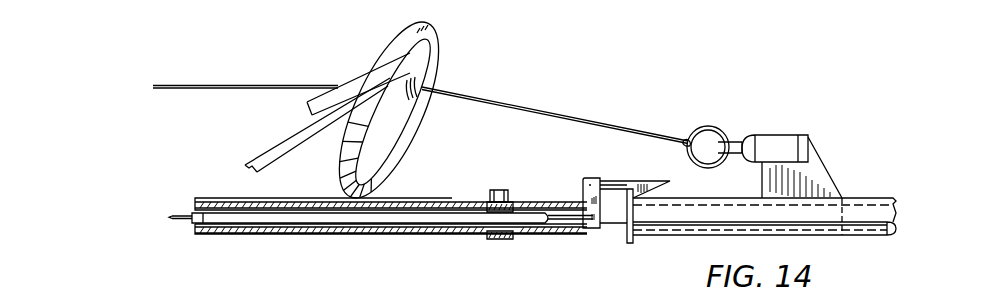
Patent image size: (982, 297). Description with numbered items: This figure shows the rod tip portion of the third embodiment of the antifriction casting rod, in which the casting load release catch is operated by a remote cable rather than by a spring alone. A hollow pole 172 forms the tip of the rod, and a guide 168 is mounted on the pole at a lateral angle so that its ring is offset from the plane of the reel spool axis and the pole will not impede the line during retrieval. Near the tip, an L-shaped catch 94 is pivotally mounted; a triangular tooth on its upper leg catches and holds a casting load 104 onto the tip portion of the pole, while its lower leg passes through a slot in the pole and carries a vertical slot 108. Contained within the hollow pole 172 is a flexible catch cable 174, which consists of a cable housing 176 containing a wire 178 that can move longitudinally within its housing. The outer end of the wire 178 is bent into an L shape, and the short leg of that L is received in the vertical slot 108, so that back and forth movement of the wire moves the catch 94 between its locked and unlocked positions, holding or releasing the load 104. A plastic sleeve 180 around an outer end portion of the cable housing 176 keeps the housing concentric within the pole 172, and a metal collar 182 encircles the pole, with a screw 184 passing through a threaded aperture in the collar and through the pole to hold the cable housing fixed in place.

The L-shaped catch 94 is at (620, 176).
The casting load 104 is at (847, 186).
The vertical slot 108 is at (583, 232).
The guide 168 is at (400, 48).
The hollow pole 172 is at (310, 235).
The catch cable 174 is at (186, 232).
The cable housing 176 is at (392, 227).
The wire 178 is at (570, 205).
The plastic sleeve 180 is at (485, 212).
The metal collar 182 is at (507, 239).
The screw 184 is at (500, 190).